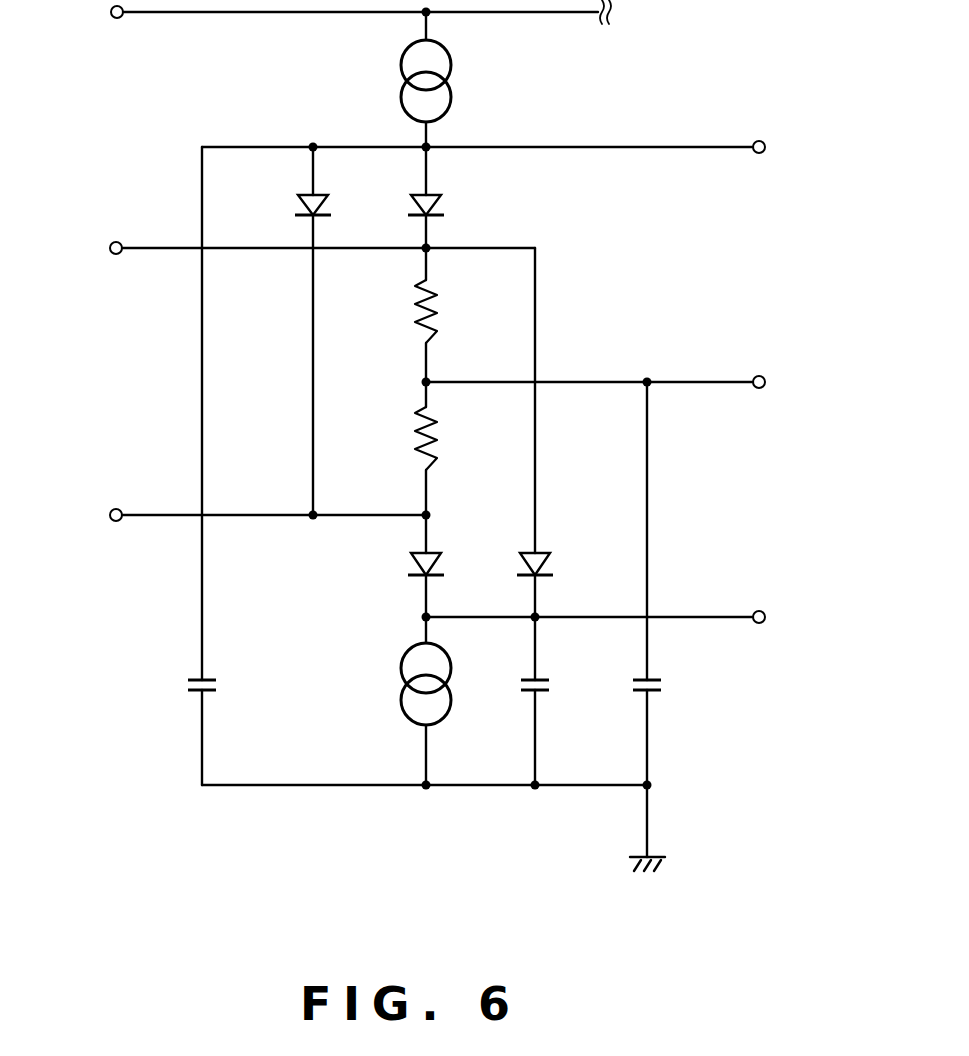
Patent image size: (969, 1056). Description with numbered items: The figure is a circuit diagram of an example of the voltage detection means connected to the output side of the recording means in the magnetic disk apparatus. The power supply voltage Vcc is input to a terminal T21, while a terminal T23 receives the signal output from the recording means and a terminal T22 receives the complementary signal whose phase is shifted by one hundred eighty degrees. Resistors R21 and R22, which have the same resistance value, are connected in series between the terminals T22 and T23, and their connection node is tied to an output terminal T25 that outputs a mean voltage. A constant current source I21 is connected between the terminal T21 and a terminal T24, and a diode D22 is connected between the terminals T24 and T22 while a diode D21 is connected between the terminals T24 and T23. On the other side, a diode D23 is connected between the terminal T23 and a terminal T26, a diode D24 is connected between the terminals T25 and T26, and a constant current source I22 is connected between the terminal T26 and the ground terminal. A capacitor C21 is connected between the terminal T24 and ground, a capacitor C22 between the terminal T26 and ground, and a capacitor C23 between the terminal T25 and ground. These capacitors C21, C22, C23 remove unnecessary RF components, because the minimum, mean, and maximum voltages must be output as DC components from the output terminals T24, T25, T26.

The terminal T21 is at (110, 14).
The terminal T22 is at (109, 250).
The terminal T23 is at (109, 517).
The terminal T24 is at (767, 150).
The output terminal T25 is at (767, 385).
The terminal T26 is at (767, 620).
The constant current source I21 is at (455, 86).
The constant current source I22 is at (444, 718).
The diode D21 is at (296, 206).
The diode D22 is at (443, 210).
The diode D23 is at (452, 550).
The diode D24 is at (563, 550).
The resistor R21 is at (428, 318).
The resistor R22 is at (428, 445).
The capacitor C21 is at (218, 683).
The capacitor C22 is at (551, 683).
The capacitor C23 is at (663, 683).